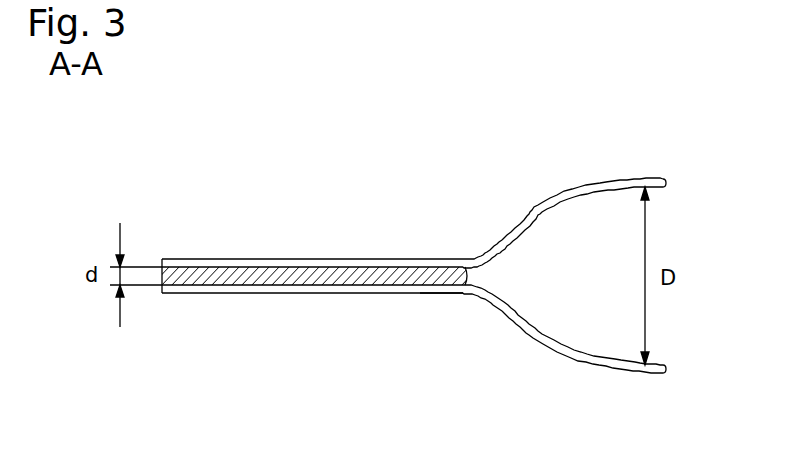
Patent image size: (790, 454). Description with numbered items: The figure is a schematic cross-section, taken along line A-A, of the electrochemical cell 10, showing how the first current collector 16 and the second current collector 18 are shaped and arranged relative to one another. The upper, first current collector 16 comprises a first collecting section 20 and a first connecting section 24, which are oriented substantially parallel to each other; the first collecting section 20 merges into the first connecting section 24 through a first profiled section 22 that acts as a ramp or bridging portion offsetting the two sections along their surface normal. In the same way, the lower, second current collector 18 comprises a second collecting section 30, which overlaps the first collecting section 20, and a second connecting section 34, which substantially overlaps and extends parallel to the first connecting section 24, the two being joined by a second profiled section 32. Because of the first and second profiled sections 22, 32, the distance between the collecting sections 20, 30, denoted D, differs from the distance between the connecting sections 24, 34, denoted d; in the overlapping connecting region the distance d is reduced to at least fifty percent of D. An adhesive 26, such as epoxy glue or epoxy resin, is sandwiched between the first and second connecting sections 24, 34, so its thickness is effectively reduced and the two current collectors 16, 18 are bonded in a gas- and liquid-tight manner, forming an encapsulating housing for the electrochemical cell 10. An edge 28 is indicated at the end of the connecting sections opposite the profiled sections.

The electrochemical cell 10 is at (254, 170).
The first current collector 16 is at (448, 218).
The second current collector 18 is at (437, 327).
The first collecting section 20 is at (631, 178).
The first profiled section 22 is at (532, 217).
The first connecting section 24 is at (212, 262).
The adhesive 26 is at (287, 272).
The edge 28 is at (181, 330).
The second collecting section 30 is at (623, 370).
The second profiled section 32 is at (523, 328).
The second connecting section 34 is at (258, 293).